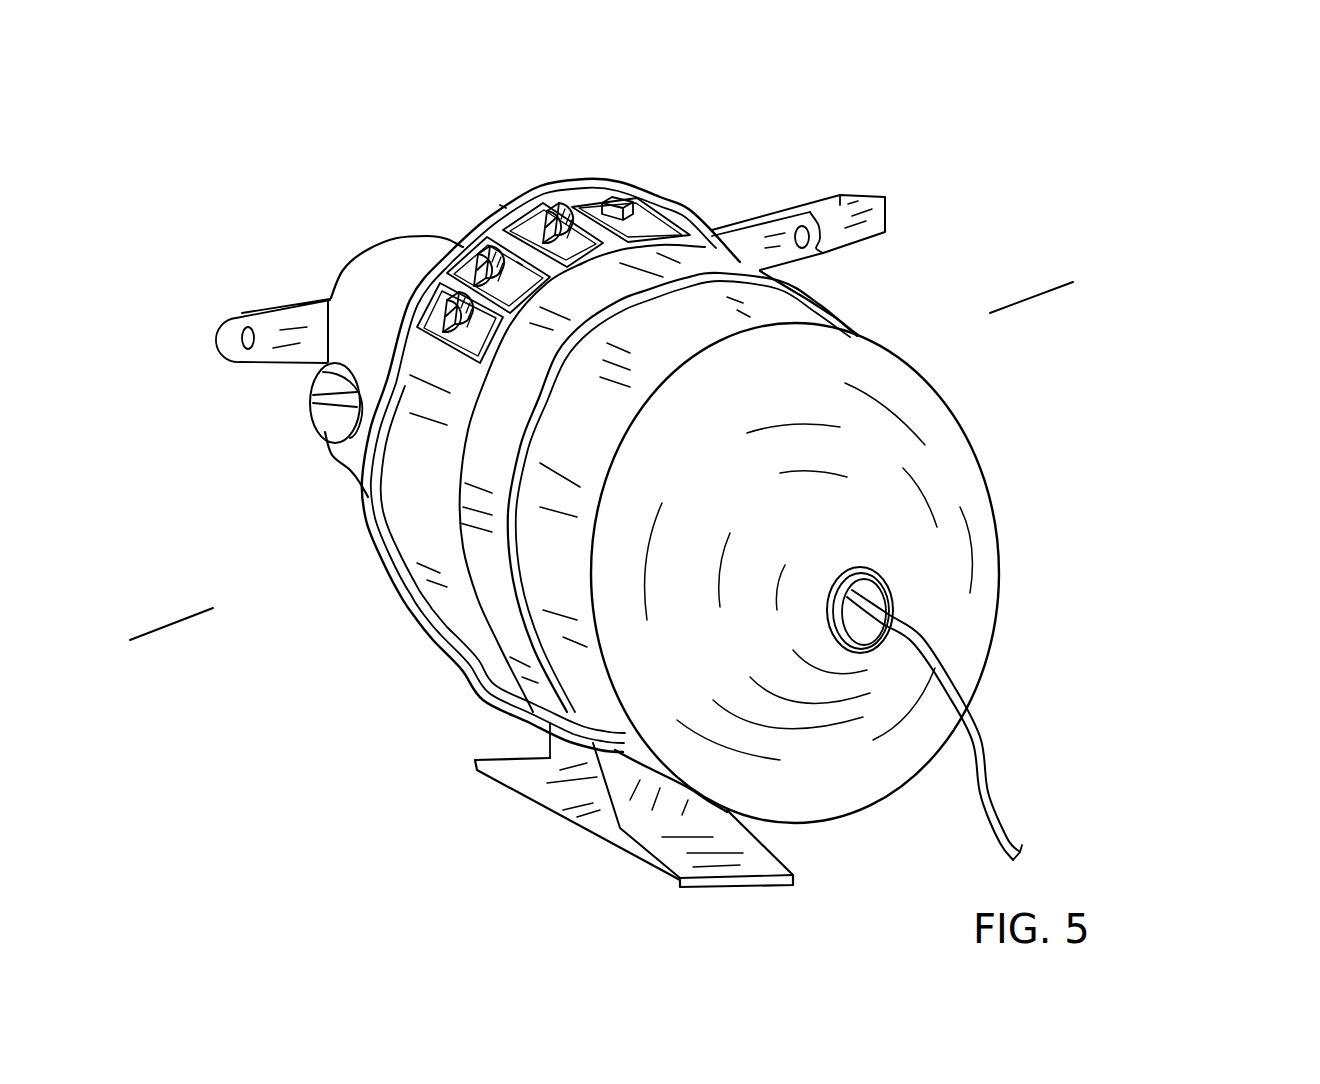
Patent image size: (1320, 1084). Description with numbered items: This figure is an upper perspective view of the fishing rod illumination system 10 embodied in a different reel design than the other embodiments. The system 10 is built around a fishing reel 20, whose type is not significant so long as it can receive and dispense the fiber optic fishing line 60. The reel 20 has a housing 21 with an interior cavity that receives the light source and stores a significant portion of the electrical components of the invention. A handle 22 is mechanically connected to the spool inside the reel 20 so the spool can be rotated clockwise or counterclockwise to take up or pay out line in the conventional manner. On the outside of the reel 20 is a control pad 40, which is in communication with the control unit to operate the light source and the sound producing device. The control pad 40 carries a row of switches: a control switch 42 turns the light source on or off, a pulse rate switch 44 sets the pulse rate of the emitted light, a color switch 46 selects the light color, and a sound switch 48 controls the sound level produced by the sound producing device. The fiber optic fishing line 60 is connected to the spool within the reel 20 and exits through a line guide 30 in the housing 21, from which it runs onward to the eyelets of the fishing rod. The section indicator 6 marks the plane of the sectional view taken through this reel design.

The line dispensing device 10 is at (1105, 181).
The rear housing 20 is at (389, 295).
The base 21 is at (483, 660).
The mounting bracket 22 is at (863, 210).
The hub 30 is at (897, 603).
The dial ring 40 is at (485, 226).
The knob 42 is at (457, 327).
The knob 44 is at (482, 270).
The knob 46 is at (548, 228).
The button 48 is at (627, 207).
The cord 60 is at (980, 813).
The section line 6- 6 is at (1033, 300).